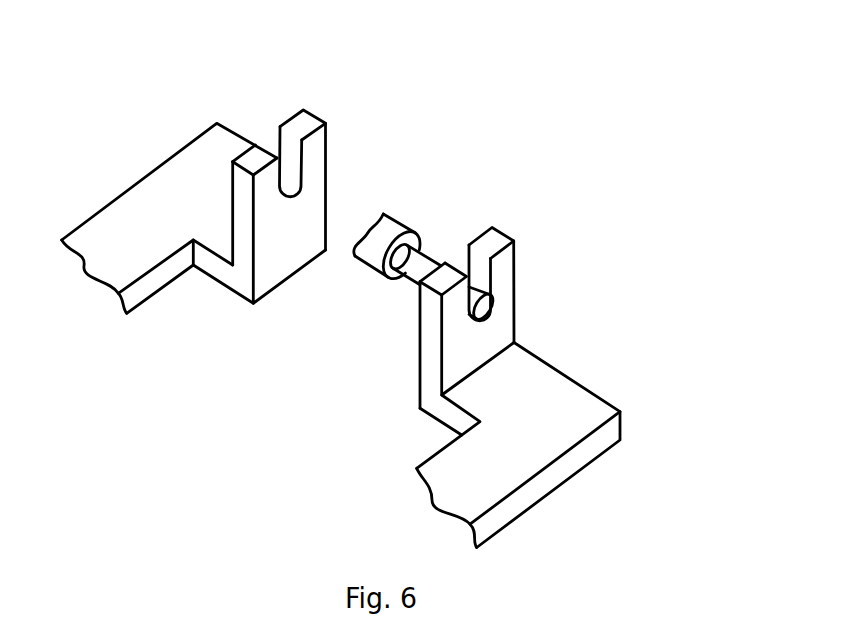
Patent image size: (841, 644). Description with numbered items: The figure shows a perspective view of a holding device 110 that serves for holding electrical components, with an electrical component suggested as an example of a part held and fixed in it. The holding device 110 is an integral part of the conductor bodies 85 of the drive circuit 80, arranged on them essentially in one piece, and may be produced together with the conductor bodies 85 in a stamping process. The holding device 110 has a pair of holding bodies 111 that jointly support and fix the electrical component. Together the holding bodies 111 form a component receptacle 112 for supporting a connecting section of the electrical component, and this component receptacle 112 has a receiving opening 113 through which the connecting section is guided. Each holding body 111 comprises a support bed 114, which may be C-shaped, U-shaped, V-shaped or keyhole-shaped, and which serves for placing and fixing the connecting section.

The drive circuit 80 is at (562, 156).
The conductor body 85 is at (160, 182).
The holding device 110 is at (566, 243).
The holding body 111 is at (310, 173).
The component receptacle 112 is at (526, 290).
The receiving opening 113 is at (261, 129).
The support bed 114 is at (294, 146).